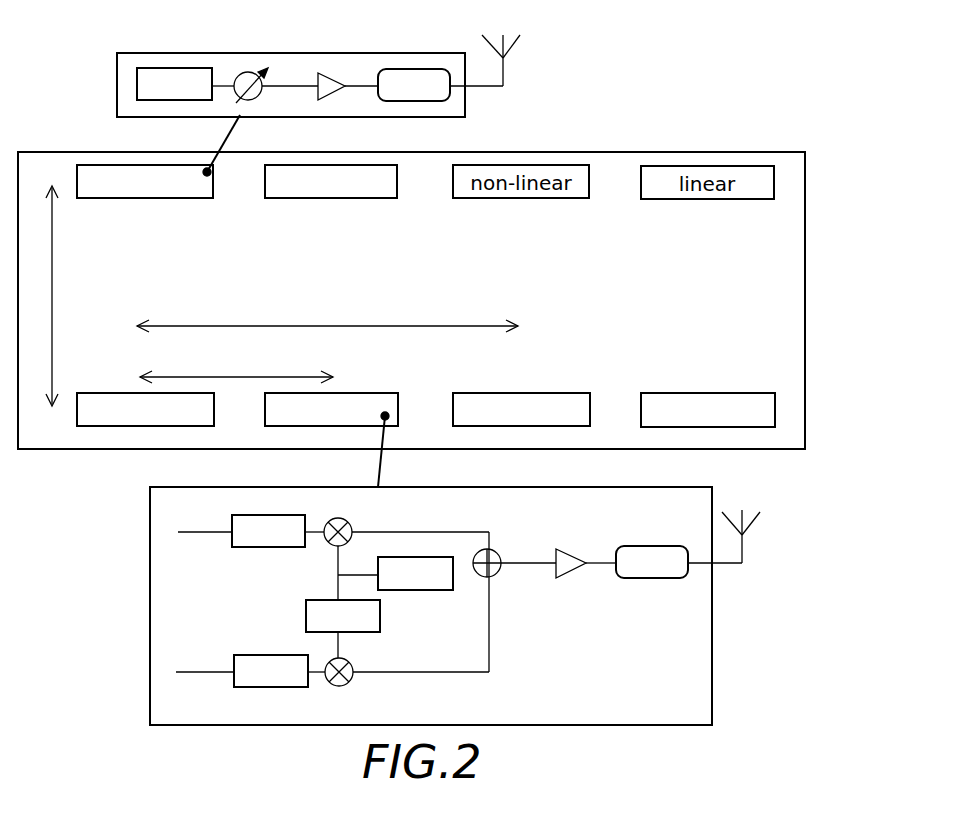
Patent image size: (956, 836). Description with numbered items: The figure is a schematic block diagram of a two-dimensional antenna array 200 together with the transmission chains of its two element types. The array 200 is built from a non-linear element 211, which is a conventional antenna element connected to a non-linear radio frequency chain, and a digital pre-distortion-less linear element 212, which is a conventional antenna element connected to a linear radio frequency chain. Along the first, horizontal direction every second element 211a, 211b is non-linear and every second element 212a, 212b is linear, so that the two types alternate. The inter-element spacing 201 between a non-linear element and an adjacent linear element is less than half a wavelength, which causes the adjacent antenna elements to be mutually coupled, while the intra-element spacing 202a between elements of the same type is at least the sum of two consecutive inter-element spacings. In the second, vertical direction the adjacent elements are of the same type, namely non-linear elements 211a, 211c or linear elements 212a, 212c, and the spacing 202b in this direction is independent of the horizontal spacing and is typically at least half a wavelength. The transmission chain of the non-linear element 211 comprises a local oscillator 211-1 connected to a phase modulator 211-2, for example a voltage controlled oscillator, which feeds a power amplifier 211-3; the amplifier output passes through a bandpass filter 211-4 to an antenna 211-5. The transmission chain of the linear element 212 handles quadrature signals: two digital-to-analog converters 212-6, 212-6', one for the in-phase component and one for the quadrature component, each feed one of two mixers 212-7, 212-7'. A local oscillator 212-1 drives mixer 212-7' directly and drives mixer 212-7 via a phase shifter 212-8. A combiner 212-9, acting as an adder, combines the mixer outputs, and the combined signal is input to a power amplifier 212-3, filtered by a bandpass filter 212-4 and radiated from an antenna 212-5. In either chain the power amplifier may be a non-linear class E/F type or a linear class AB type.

The two-dimensional antenna array 200 is at (806, 300).
The inter-element spacing 201 is at (308, 378).
The intra-element spacing 202a is at (418, 323).
The spacing in the second direction 202b is at (52, 252).
The non-linear element 211 is at (116, 88).
The local oscillator 211-1 is at (157, 68).
The phase modulator 211-2 is at (243, 72).
The power amplifier 211-3 is at (322, 72).
The bandpass filter 211-4 is at (427, 69).
The antenna 211-5 is at (505, 86).
The non-linear element 211a is at (126, 393).
The non-linear element 211b is at (563, 393).
The non-linear element 211c is at (193, 199).
The digital pre-distortion-less linear element 212 is at (149, 595).
The local oscillator 212-1 is at (418, 590).
The power amplifier 212-3 is at (570, 578).
The bandpass filter 212-4 is at (656, 546).
The antenna 212-5 is at (744, 565).
The digital-to-analog converter 212-6 is at (247, 652).
The digital-to-analog converter 212-6' is at (241, 550).
The mixer 212-7 is at (379, 686).
The mixer 212-7' is at (382, 520).
The phase shifter 212-8 is at (362, 632).
The combiner 212-9 is at (498, 548).
The digital pre-distortion-less linear element 212a is at (386, 393).
The digital pre-distortion-less linear element 212b is at (718, 393).
The digital pre-distortion-less linear element 212c is at (355, 199).